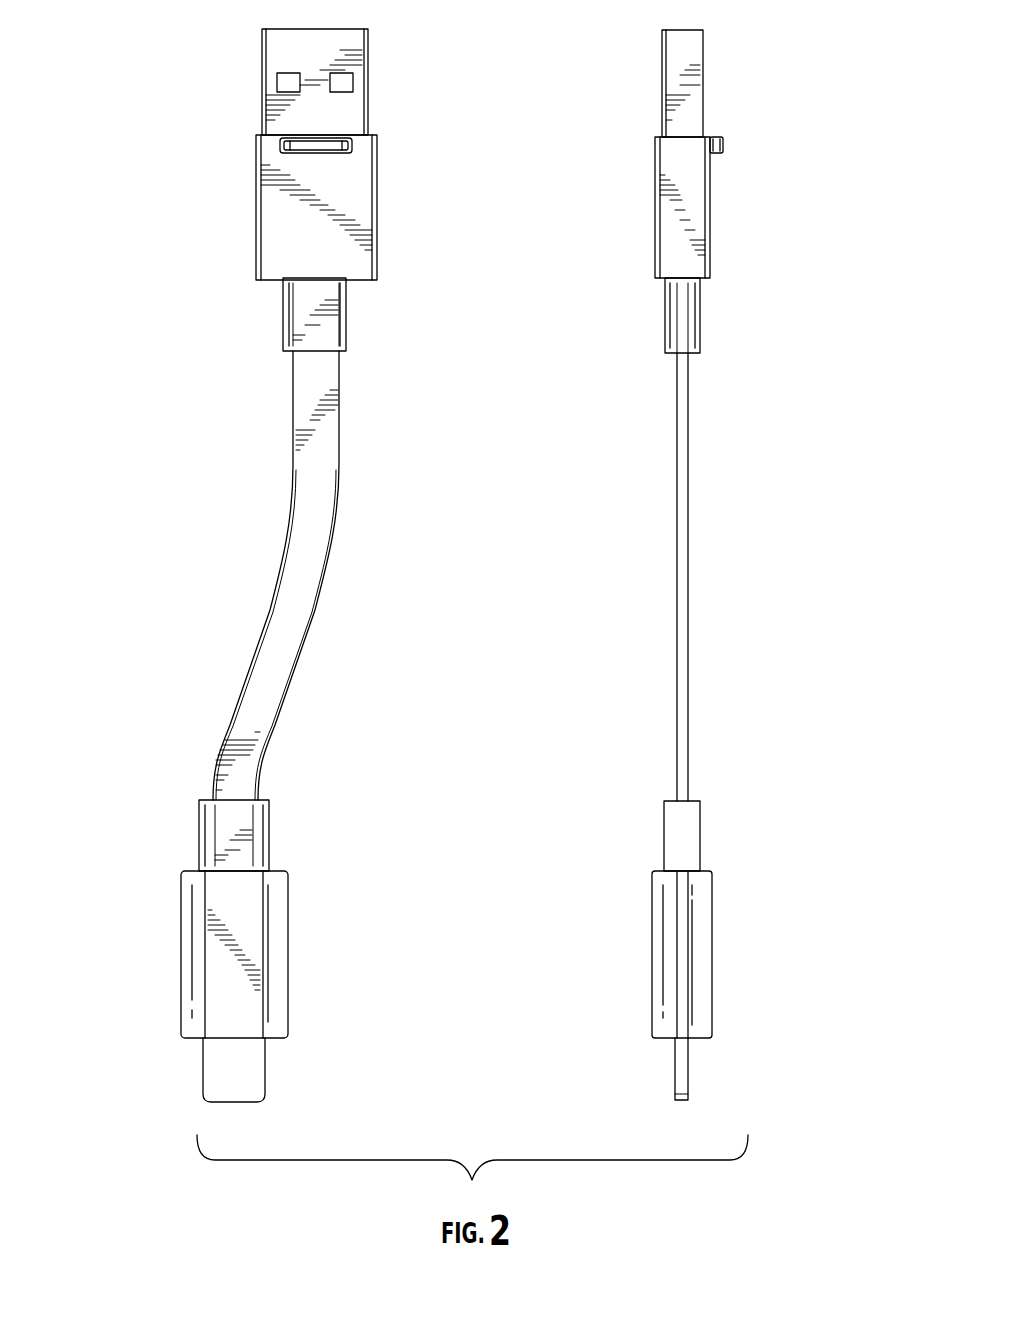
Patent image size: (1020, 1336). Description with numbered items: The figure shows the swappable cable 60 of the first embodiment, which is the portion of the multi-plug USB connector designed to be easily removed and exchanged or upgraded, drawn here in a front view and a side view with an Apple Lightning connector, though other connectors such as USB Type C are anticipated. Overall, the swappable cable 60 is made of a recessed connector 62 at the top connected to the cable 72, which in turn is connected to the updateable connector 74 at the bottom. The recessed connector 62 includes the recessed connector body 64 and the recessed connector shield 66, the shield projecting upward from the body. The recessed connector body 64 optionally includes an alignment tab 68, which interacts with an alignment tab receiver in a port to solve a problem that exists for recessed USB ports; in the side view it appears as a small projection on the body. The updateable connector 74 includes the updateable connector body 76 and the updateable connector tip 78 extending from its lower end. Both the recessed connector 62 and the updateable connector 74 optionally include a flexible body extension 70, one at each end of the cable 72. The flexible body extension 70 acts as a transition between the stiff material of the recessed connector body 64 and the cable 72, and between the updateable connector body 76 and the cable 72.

The swappable cable 60 is at (463, 565).
The recessed connector 62 is at (497, 150).
The recessed connector body 64 is at (342, 186).
The recessed connector shield 66 is at (321, 48).
The alignment tab 68 is at (295, 148).
The flexible body extension 70 is at (319, 303).
The cable 72 is at (287, 620).
The updateable connector 74 is at (472, 961).
The updateable connector body 76 is at (250, 915).
The updateable connector tip 78 is at (242, 1067).